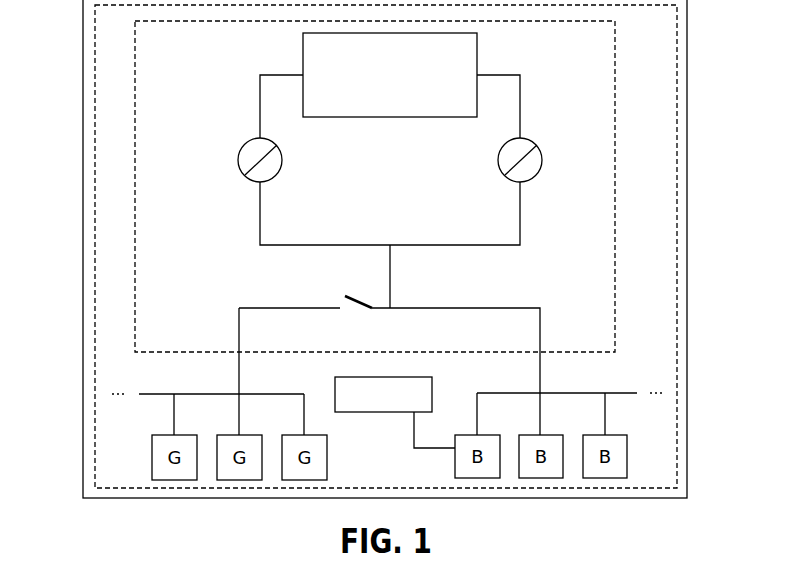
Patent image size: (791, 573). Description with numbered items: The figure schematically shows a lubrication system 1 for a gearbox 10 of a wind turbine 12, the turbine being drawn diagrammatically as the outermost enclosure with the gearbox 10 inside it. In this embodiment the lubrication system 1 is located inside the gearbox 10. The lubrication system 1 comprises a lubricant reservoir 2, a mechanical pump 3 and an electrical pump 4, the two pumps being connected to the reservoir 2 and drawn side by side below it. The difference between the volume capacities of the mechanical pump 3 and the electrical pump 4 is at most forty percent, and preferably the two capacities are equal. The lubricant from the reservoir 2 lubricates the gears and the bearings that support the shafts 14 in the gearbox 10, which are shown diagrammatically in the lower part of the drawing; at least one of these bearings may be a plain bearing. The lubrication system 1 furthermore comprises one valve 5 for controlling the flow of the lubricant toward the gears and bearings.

The lubrication system 1 is at (615, 125).
The lubricant reservoir 2 is at (470, 112).
The mechanical pump 3 is at (535, 162).
The electrical pump 4 is at (247, 155).
The valve 5 is at (338, 298).
The gearbox 10 is at (677, 168).
The wind turbine 12 is at (83, 252).
The shafts 14 is at (432, 390).